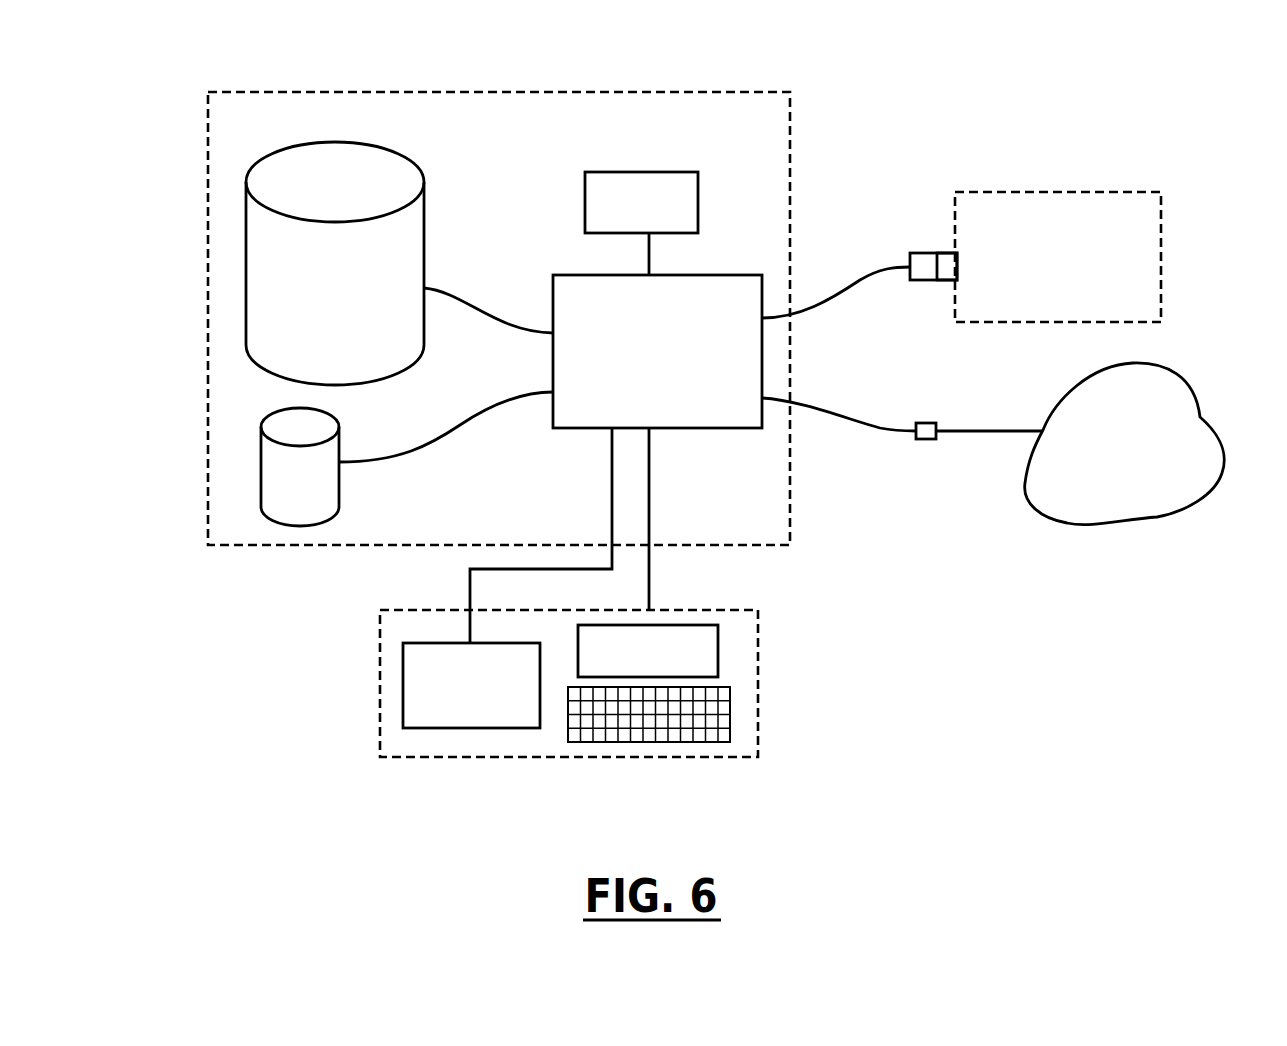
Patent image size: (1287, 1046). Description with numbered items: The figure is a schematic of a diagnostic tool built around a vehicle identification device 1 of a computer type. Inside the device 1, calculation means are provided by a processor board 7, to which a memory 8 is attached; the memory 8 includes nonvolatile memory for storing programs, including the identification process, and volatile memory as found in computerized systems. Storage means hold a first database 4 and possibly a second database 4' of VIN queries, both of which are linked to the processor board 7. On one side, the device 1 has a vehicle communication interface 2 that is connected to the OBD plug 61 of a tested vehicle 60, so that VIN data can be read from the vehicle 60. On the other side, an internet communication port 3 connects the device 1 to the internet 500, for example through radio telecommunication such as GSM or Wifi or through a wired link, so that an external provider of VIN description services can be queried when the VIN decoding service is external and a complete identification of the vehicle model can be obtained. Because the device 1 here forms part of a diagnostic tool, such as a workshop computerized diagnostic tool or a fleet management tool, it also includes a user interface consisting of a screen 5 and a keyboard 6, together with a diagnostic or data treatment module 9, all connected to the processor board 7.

The vehicle identification device 1 is at (242, 547).
The vehicle communication interface 2 is at (920, 252).
The communication port 3 is at (932, 440).
The first database 4 is at (364, 192).
The second database 4' is at (239, 446).
The screen 5 is at (718, 655).
The keyboard 6 is at (730, 713).
The processor board 7 is at (572, 430).
The memory 8 is at (658, 183).
The diagnostic or data treatment module 9 is at (462, 728).
The tested vehicle 60 is at (1113, 195).
The OBD plug 61 is at (957, 253).
The internet 500 is at (1097, 530).